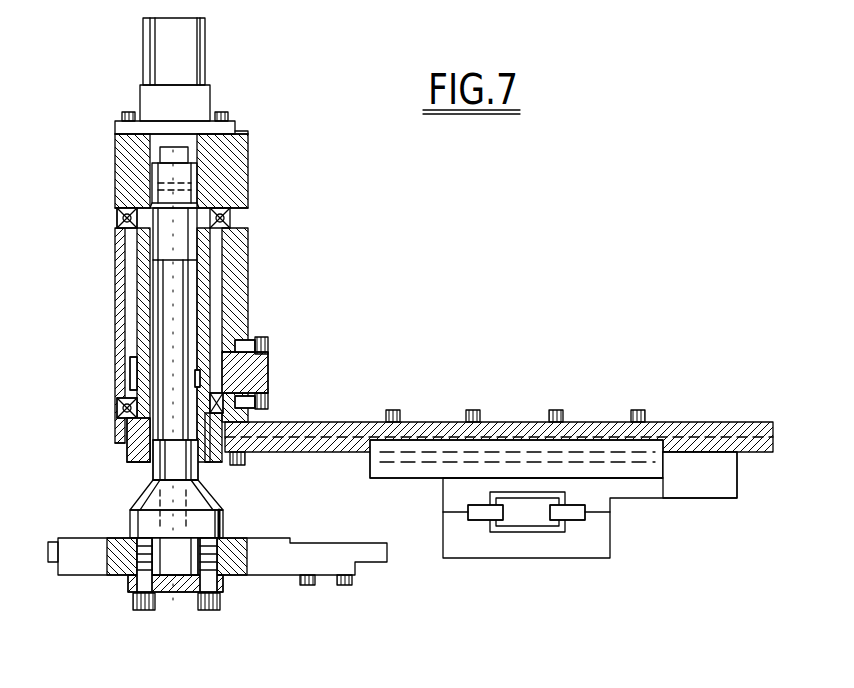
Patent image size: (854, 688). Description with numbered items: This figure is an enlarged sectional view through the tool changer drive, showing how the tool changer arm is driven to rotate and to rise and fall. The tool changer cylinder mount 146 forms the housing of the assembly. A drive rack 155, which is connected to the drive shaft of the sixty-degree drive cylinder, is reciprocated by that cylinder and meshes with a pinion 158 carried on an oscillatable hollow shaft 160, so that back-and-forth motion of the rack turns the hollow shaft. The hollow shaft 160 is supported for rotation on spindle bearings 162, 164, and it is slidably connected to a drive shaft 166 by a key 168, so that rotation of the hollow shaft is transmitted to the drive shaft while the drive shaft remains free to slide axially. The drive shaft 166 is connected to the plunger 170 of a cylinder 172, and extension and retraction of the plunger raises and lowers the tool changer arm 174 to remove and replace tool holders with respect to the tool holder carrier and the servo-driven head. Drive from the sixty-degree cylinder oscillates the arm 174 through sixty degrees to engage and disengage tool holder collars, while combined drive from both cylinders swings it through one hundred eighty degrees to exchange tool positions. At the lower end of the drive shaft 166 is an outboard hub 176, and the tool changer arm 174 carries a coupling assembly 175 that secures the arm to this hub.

The tool changer cylinder mount 146 is at (113, 300).
The drive rack 155 is at (243, 374).
The pinion 158 is at (130, 368).
The hollow shaft 160 is at (208, 313).
The spindle bearing 162 is at (118, 212).
The spindle bearing 164 is at (125, 409).
The drive shaft 166 is at (180, 292).
The key 168 is at (150, 423).
The plunger 170 is at (177, 145).
The cylinder 172 is at (204, 68).
The tool changer arm 174 is at (92, 572).
The coupling assembly 175 is at (177, 595).
The outboard hub 176 is at (215, 501).